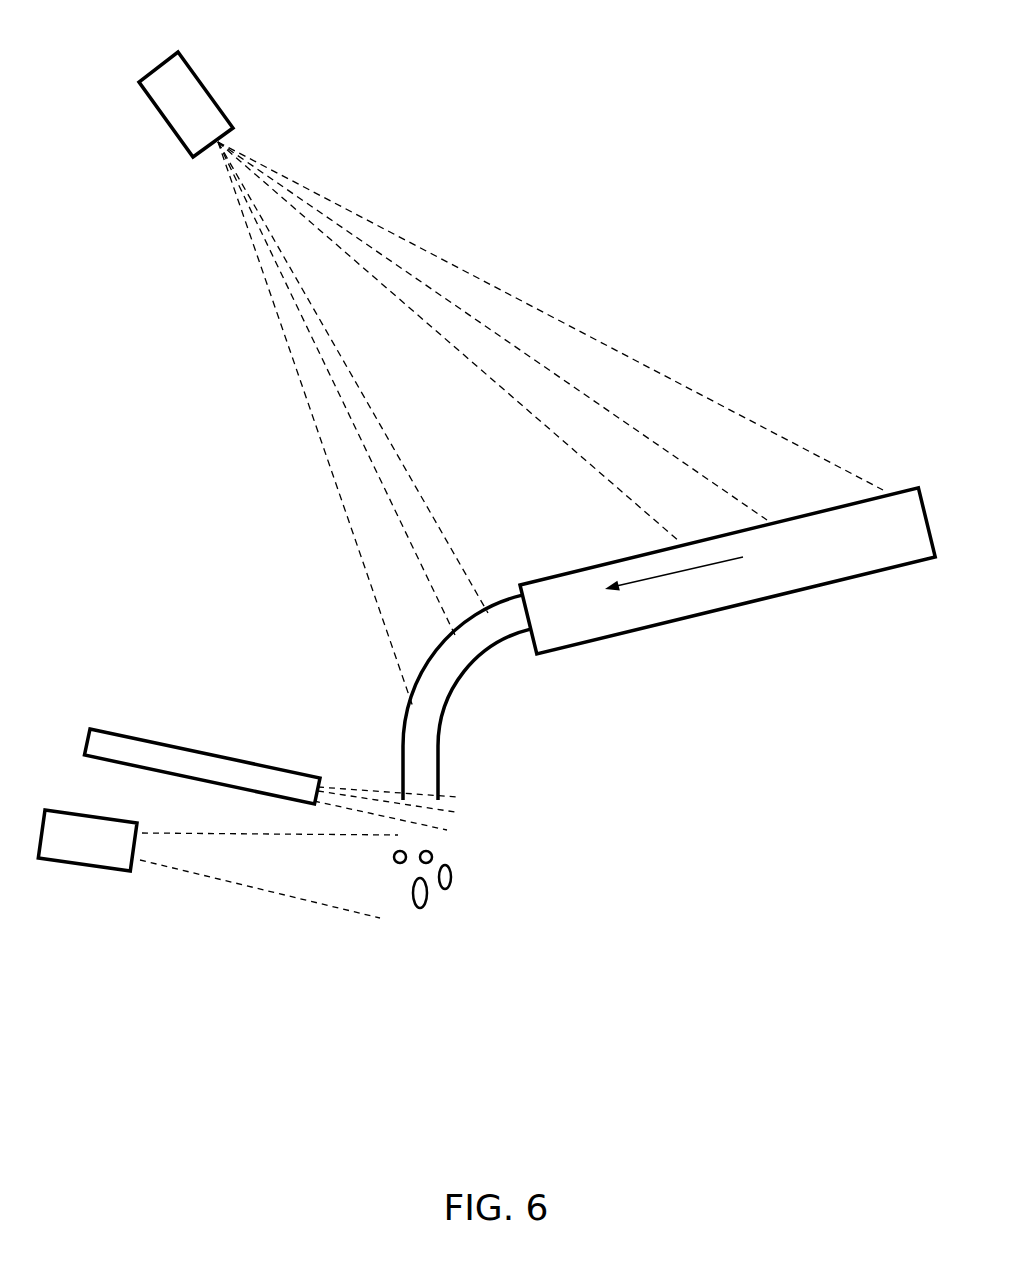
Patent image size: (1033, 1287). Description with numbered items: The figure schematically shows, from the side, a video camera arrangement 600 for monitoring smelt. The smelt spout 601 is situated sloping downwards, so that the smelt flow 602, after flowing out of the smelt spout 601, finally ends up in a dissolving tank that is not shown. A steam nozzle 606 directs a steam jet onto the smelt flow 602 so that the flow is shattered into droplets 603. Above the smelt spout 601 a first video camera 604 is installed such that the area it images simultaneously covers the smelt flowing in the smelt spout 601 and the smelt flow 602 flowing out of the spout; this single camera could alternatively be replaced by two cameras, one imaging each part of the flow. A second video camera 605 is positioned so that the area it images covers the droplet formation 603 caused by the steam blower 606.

The video camera arrangement 600 is at (273, 1120).
The smelt spout 601 is at (888, 572).
The smelt flow 602 is at (458, 693).
The droplets 603 is at (495, 891).
The first video camera 604 is at (197, 72).
The second video camera 605 is at (93, 870).
The steam nozzle 606 is at (135, 735).